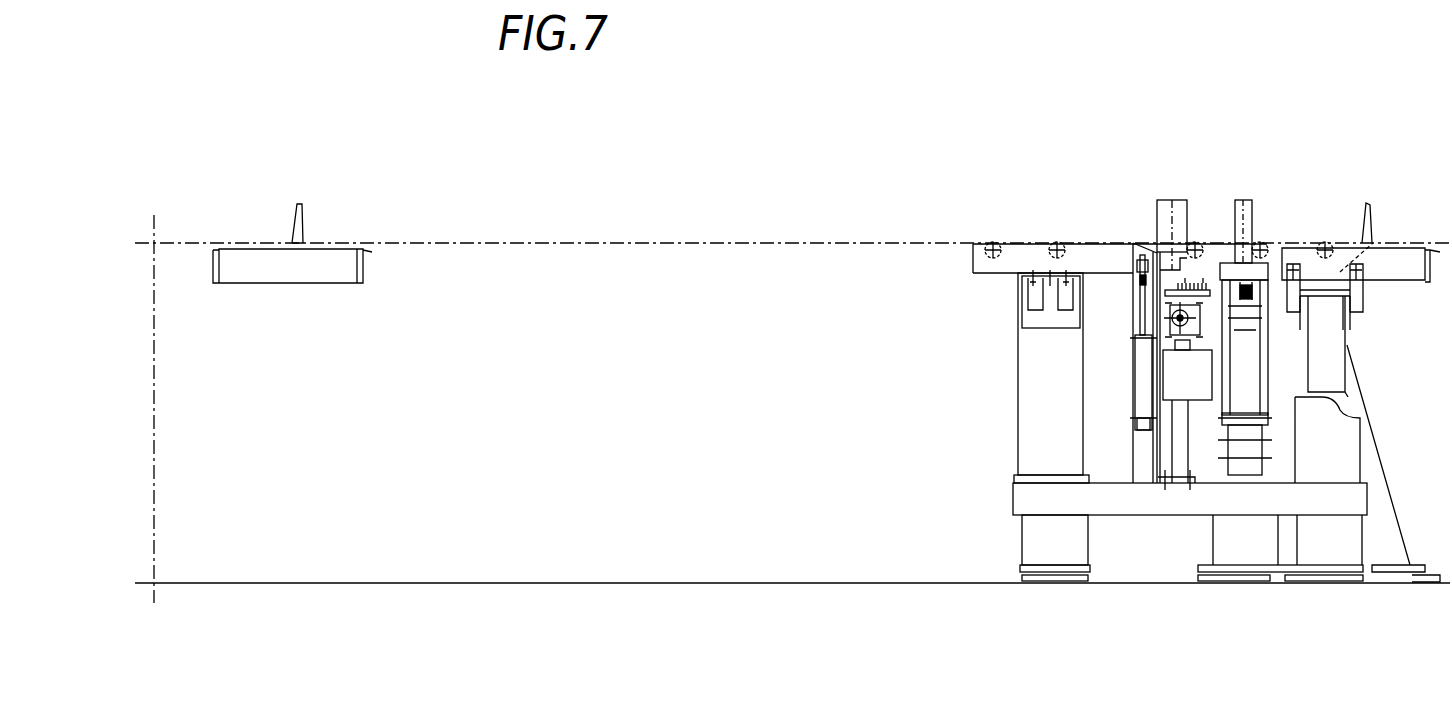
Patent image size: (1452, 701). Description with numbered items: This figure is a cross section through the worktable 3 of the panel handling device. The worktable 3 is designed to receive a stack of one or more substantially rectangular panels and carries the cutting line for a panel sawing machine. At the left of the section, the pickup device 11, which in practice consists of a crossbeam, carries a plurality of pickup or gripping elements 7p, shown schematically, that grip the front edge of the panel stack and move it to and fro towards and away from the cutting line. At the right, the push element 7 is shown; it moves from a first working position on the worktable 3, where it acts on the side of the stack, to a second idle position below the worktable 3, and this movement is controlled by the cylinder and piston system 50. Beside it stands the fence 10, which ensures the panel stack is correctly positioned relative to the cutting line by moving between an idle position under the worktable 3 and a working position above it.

The worktable 3 is at (980, 243).
The push element 7 is at (1167, 205).
The pickup or gripping elements 7p is at (303, 243).
The fence 10 is at (1240, 205).
The pickup device 11 is at (335, 270).
The cylinder and piston system 50 is at (1140, 355).